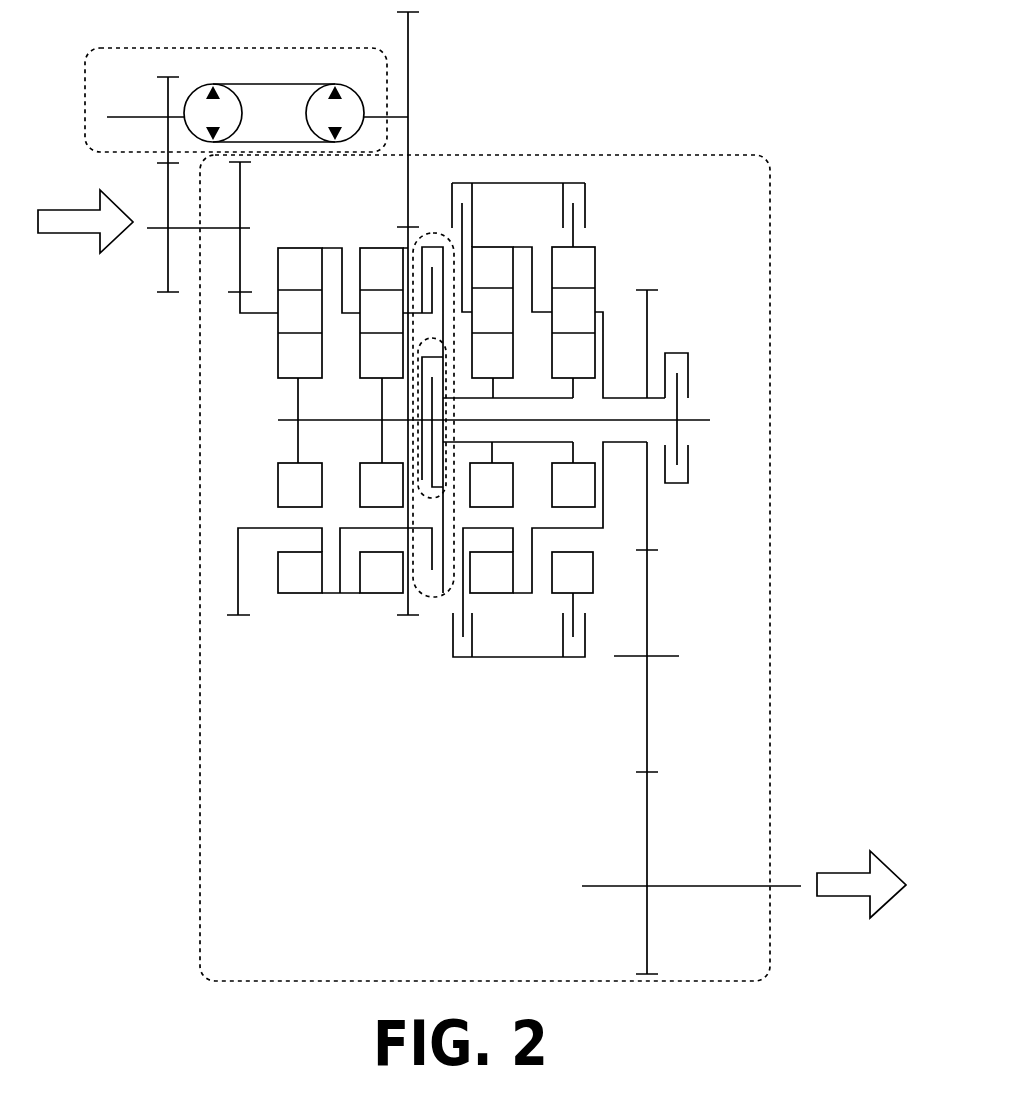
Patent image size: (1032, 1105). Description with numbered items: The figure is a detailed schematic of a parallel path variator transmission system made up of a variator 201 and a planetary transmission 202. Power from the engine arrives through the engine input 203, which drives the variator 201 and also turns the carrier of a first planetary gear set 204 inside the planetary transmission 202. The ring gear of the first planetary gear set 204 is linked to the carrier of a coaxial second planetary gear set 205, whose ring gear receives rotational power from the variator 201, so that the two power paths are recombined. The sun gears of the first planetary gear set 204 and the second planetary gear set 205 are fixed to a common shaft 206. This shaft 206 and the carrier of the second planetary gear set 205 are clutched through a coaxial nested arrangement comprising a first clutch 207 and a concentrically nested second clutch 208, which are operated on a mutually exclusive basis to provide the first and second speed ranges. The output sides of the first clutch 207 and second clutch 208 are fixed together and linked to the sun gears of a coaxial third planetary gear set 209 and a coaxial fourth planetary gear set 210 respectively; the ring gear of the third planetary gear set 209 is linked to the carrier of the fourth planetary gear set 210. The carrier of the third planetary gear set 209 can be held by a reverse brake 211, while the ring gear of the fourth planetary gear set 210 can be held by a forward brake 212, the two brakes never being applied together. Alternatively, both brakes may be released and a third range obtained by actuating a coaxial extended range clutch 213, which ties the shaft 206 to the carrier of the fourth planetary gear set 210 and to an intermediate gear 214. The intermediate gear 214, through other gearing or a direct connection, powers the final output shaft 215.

The variator 201 is at (300, 133).
The planetary transmission 202 is at (292, 958).
The engine input 203 is at (147, 230).
The first planetary gear set 204 is at (289, 385).
The second planetary gear set 205 is at (358, 385).
The common shaft 206 is at (287, 424).
The first clutch 207 is at (427, 500).
The second clutch 208 is at (433, 598).
The third planetary gear set 209 is at (505, 247).
The fourth planetary gear set 210 is at (596, 245).
The reverse brake 211 is at (458, 183).
The forward brake 212 is at (571, 183).
The extended range clutch 213 is at (672, 350).
The intermediate gear 214 is at (648, 510).
The final output shaft 215 is at (695, 878).